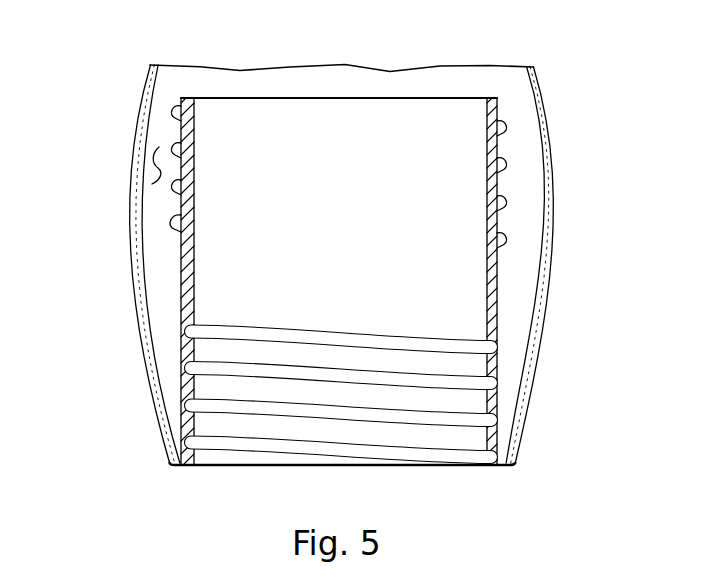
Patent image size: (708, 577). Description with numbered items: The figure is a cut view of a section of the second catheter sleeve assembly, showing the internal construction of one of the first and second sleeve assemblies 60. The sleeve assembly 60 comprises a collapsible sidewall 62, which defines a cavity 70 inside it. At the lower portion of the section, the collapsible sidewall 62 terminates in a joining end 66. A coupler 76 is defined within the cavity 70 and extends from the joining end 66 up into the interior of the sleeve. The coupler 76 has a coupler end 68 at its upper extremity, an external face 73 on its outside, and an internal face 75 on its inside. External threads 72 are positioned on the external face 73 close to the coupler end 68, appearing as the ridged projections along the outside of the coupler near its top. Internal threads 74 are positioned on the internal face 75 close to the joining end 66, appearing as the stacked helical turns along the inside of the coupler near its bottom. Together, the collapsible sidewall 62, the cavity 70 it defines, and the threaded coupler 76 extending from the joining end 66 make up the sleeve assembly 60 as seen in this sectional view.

The catheter sleeve assembly 60 is at (358, 252).
The collapsible sidewall 62 is at (547, 146).
The joining end 66 is at (462, 467).
The coupler end 68 is at (428, 98).
The cavity 70 is at (152, 168).
The external threads 72 is at (507, 165).
The external face 73 is at (500, 288).
The internal threads 74 is at (235, 338).
The internal face 75 is at (204, 262).
The coupler 76 is at (310, 170).